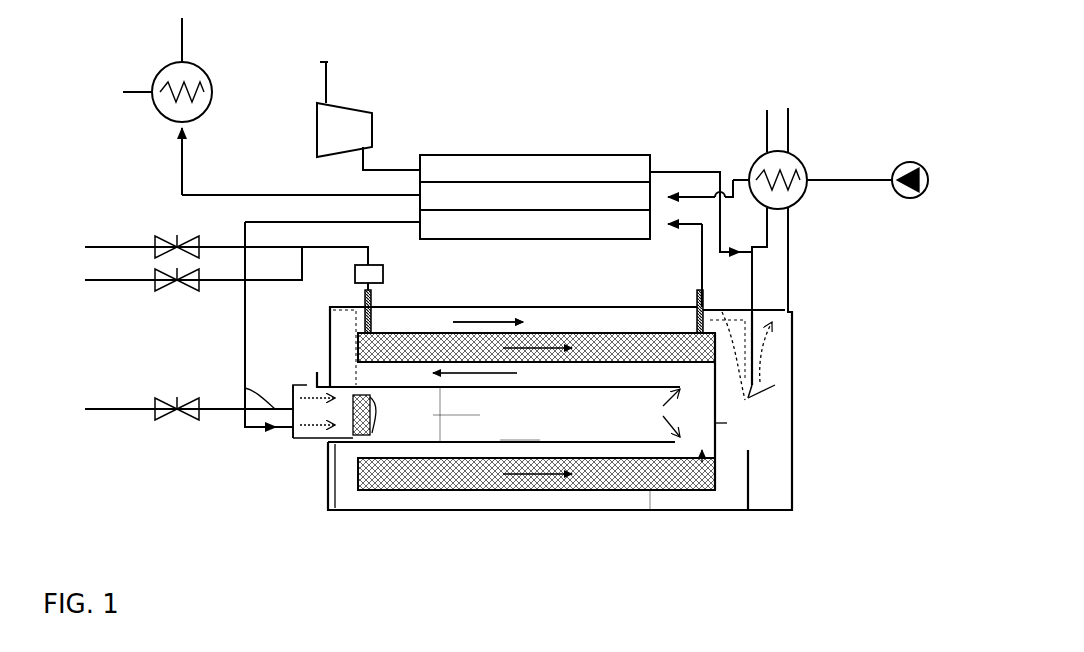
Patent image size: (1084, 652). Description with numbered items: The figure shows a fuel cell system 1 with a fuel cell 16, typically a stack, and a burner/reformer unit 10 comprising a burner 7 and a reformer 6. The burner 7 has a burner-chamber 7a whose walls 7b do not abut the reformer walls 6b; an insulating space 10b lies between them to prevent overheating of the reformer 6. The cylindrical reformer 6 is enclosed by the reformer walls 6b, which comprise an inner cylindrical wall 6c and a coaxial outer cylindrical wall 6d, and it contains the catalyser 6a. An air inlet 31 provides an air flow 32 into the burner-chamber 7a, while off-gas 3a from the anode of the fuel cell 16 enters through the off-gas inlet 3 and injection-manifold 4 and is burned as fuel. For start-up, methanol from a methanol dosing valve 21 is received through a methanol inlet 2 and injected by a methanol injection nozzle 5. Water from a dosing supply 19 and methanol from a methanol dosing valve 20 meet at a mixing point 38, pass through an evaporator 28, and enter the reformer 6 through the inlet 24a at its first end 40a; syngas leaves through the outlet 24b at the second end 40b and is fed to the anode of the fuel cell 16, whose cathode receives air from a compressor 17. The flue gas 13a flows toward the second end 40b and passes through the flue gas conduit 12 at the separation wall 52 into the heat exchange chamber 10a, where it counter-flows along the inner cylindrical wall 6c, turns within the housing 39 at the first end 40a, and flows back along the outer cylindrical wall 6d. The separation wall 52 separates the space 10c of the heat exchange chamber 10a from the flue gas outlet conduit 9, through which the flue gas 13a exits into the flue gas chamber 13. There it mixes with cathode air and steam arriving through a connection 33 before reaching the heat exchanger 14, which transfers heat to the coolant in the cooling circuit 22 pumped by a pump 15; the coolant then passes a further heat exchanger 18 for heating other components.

The fuel cell system 1 is at (622, 70).
The methanol inlet 2 is at (243, 372).
The off-gas inlet 3 is at (268, 433).
The off-gas 3a is at (423, 355).
The injection-manifold 4 is at (327, 458).
The methanol injection nozzle 5 is at (327, 502).
The reformer 6 is at (427, 510).
The catalyser 6a is at (383, 510).
The reformer walls 6b is at (548, 456).
The inner cylindrical wall 6c is at (528, 425).
The outer cylindrical wall 6d is at (550, 333).
The burner 7 is at (443, 413).
The burner-chamber 7a is at (520, 424).
The burner chamber walls 7b is at (613, 383).
The flue gas outlet conduit 9 is at (785, 345).
The burner/reformer unit 10 is at (800, 546).
The heat exchange chamber 10a is at (625, 462).
The space 10b is at (603, 455).
The space of heat exchange chamber 10c is at (660, 505).
The flue gas conduit 12 is at (702, 462).
The flue gas chamber 13 is at (797, 323).
The flue gas 13a is at (648, 408).
The heat exchanger 14 is at (803, 197).
The pump 15 is at (925, 168).
The fuel cell 16 is at (535, 155).
The compressor 17 is at (310, 120).
The further heat exchanger 18 is at (162, 78).
The dosing supply 19 is at (168, 238).
The methanol dosing valve 20 is at (175, 292).
The methanol dosing valve 21 is at (172, 420).
The cooling circuit 22 is at (857, 180).
The inlet 24a is at (378, 295).
The outlet 24b is at (696, 300).
The evaporator 28 is at (385, 270).
The air inlet 31 is at (327, 383).
The air flow 32 is at (295, 432).
The connection 33 is at (718, 272).
The mixing point 38 is at (312, 252).
The housing 39 is at (335, 510).
The first end 40a is at (355, 332).
The second end 40b is at (727, 318).
The separation wall 52 is at (793, 500).